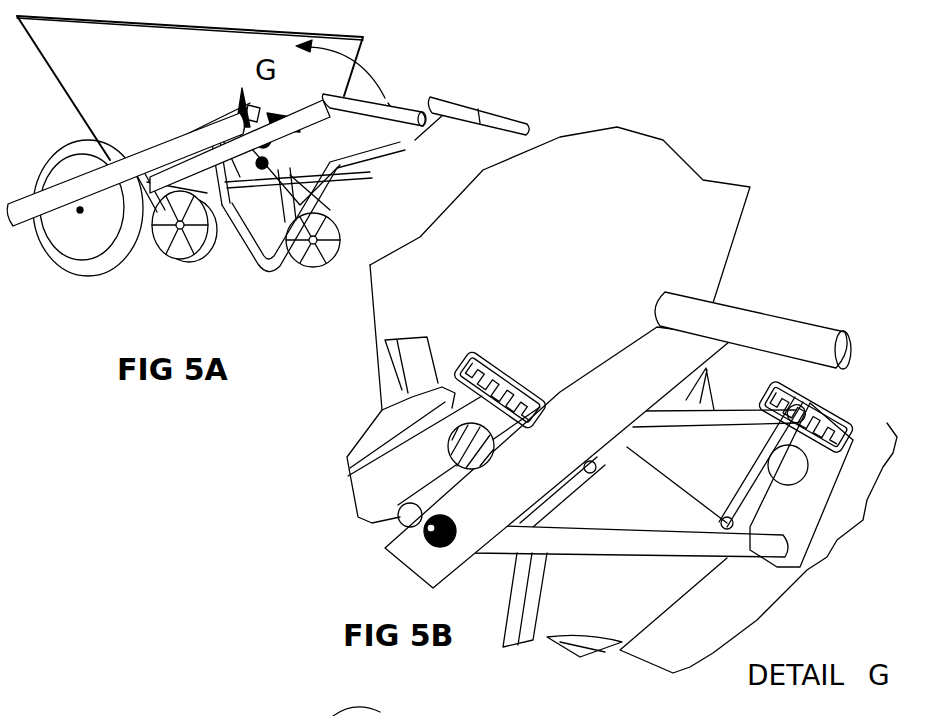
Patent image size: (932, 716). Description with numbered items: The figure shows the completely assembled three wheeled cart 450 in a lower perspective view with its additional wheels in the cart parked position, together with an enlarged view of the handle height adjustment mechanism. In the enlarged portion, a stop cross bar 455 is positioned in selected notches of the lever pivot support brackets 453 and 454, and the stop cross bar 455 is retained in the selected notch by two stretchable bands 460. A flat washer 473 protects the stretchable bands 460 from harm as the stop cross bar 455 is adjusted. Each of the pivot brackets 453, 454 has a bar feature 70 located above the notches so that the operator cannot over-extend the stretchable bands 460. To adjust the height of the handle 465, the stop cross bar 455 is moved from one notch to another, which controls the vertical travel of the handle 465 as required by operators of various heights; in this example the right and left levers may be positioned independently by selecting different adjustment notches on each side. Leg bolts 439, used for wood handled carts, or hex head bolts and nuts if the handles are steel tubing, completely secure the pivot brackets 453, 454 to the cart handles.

In FIG. 5A, the 3 wheeled cart 450 is at (168, 289).
In FIG. 5B, the bar feature 70 is at (497, 365).
In FIG. 5B, the handle 465 is at (768, 314).
In FIG. 5B, the flat washer 473 is at (804, 390).
In FIG. 5B, the stop cross bar 455 is at (372, 465).
In FIG. 5B, the lever pivot support bracket 454 is at (360, 493).
In FIG. 5B, the leg bolts 439 is at (681, 431).
In FIG. 5B, the lever pivot support bracket 453 is at (827, 499).
In FIG. 5B, the stretchable bands 460 is at (784, 469).